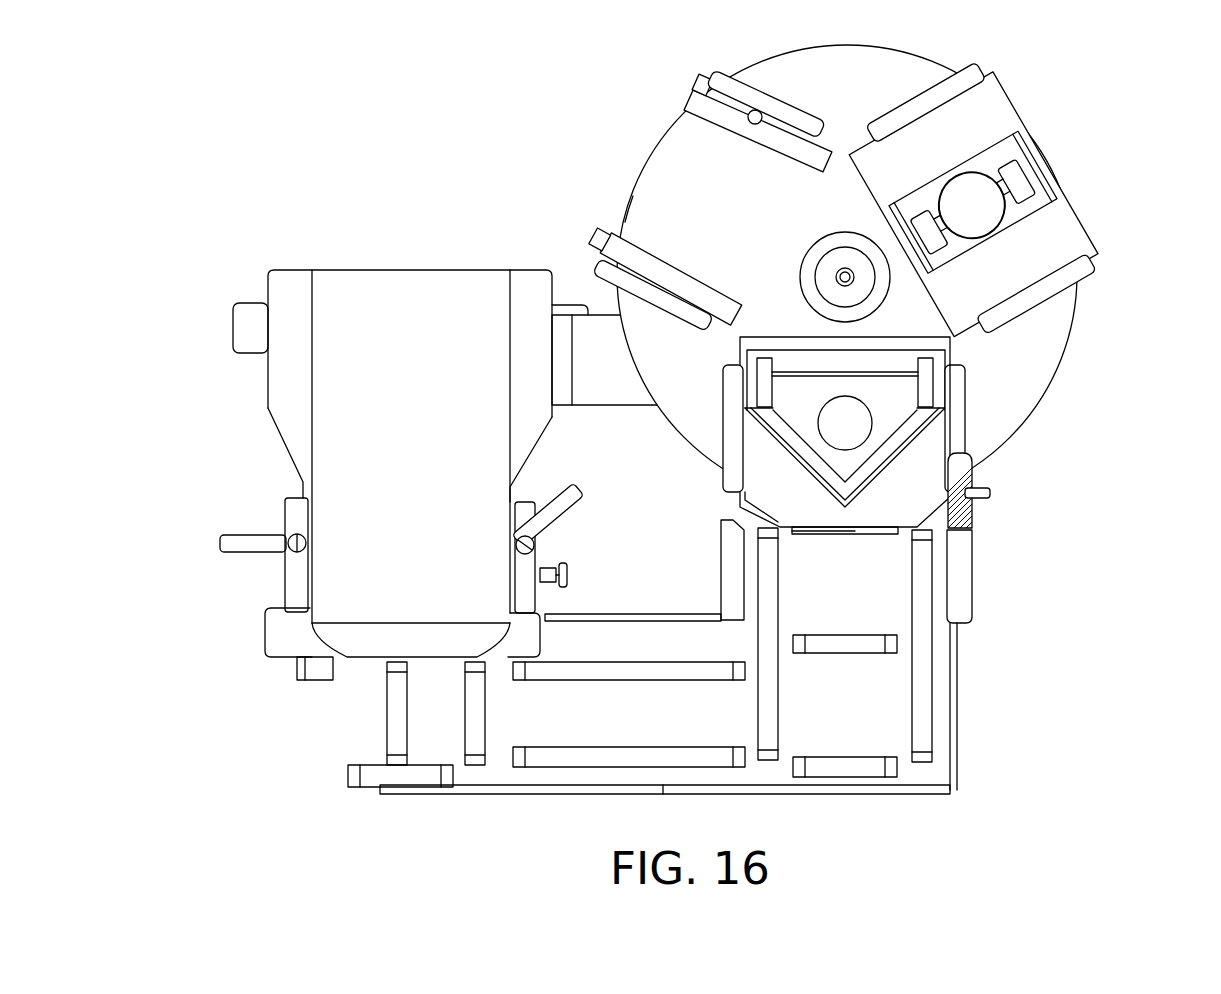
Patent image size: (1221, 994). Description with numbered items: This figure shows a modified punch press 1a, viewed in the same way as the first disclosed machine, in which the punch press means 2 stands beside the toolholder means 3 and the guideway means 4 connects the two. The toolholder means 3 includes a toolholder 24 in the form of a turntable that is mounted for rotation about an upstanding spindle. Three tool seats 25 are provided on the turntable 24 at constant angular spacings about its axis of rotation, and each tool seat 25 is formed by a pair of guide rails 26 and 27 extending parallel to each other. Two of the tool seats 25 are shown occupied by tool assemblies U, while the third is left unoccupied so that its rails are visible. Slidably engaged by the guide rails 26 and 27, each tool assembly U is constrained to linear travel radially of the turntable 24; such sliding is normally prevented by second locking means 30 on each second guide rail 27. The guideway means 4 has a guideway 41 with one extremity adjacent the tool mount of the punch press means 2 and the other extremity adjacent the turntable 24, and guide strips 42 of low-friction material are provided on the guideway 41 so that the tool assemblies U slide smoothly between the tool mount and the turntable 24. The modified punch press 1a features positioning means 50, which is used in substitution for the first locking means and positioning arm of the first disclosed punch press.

The modified punch press 1a is at (497, 160).
The punch press means 2 is at (398, 287).
The toolholder means 3 is at (660, 110).
The guideway means 4 is at (709, 676).
The toolholder 24 is at (637, 192).
The tool seats 25 is at (627, 212).
The first guide rail 26 is at (703, 275).
The second guide rail 27 is at (798, 148).
The second locking means 30 is at (752, 124).
The guideway 41 is at (762, 770).
The guide strips 42 is at (925, 683).
The positioning means 50 is at (1010, 474).
The tool assemblies U is at (762, 457).